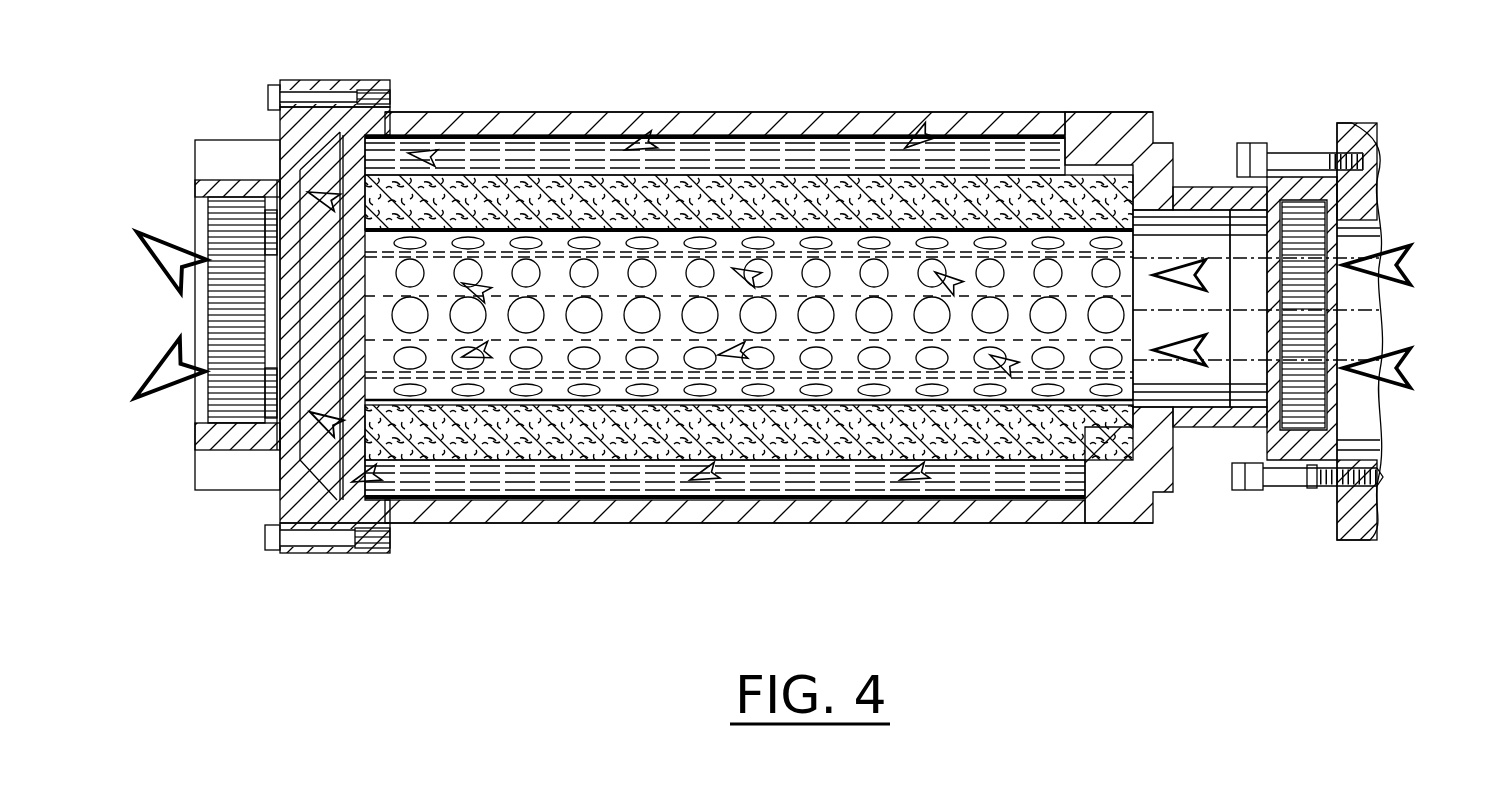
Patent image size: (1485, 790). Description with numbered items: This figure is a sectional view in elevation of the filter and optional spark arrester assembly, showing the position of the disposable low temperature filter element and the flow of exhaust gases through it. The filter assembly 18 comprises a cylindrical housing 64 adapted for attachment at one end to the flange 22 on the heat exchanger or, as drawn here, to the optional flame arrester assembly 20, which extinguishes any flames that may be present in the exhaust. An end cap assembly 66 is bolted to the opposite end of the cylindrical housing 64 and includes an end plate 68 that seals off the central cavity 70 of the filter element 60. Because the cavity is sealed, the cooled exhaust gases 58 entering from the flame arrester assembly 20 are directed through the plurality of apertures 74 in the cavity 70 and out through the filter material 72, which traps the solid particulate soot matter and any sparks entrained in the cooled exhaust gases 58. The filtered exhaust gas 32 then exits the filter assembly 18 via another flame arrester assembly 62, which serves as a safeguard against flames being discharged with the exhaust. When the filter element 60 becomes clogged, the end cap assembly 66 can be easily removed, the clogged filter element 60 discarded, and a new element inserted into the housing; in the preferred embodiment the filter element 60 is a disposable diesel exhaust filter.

The filter assembly 18 is at (769, 113).
The flame arrester assembly 20 is at (1305, 473).
The flange 22 is at (1362, 165).
The filtered exhaust gas 32 is at (190, 358).
The cooled exhaust gases 58 is at (1408, 370).
The filter element 60 is at (1140, 262).
The flame arrester assembly 62 is at (240, 452).
The cylindrical housing 64 is at (650, 523).
The end cap assembly 66 is at (331, 546).
The end plate 68 is at (336, 464).
The central cavity 70 is at (1083, 473).
The filter material 72 is at (467, 172).
The apertures 74 is at (808, 262).